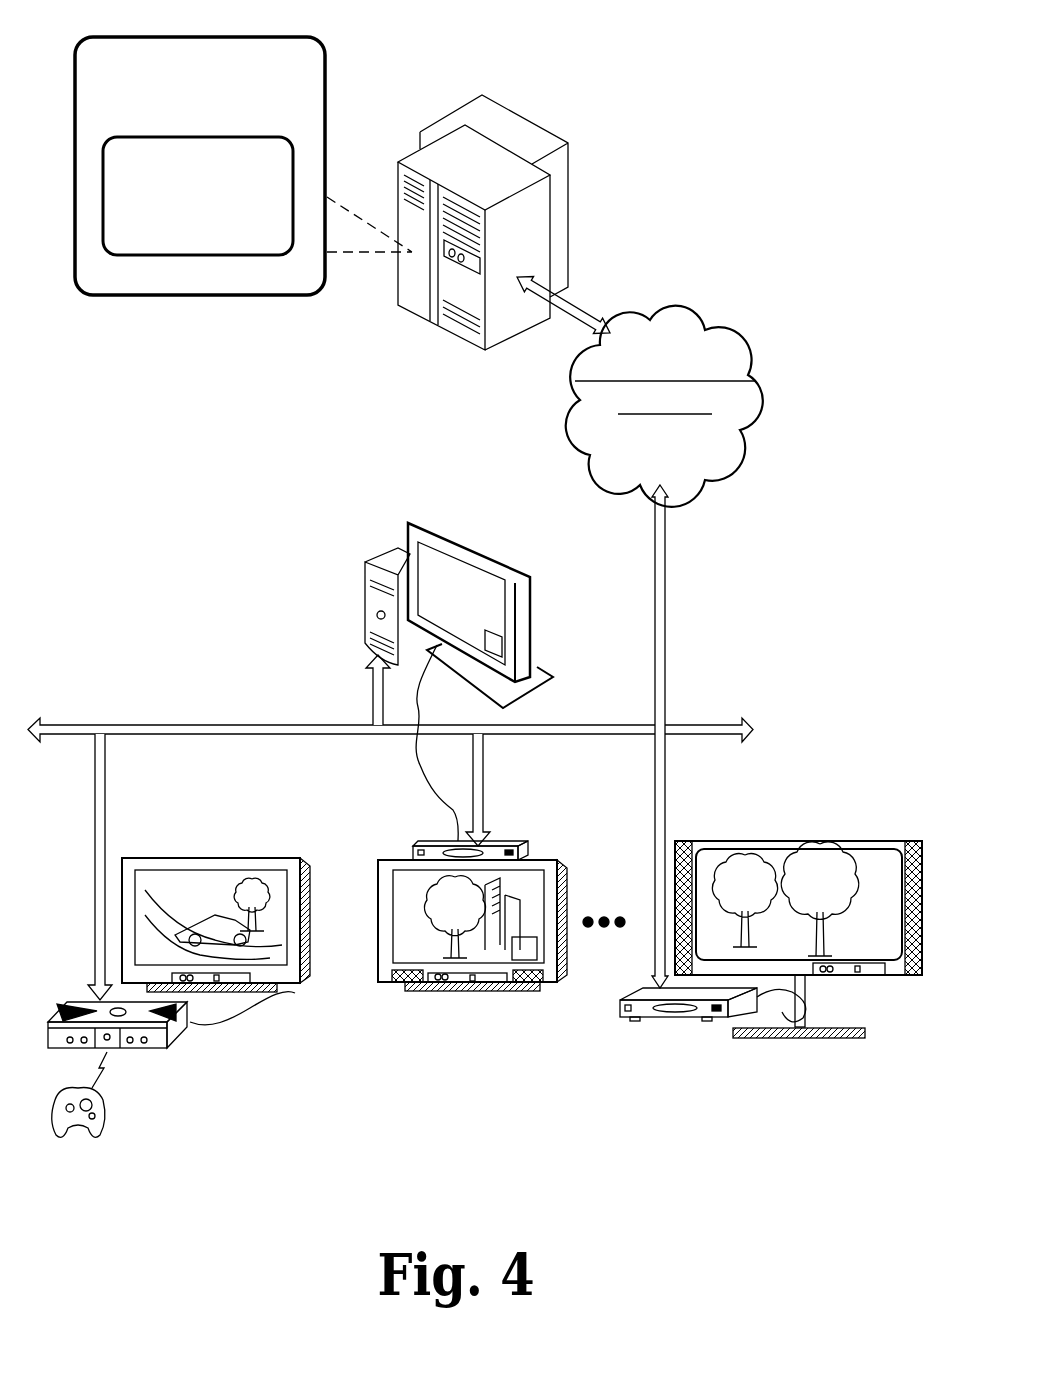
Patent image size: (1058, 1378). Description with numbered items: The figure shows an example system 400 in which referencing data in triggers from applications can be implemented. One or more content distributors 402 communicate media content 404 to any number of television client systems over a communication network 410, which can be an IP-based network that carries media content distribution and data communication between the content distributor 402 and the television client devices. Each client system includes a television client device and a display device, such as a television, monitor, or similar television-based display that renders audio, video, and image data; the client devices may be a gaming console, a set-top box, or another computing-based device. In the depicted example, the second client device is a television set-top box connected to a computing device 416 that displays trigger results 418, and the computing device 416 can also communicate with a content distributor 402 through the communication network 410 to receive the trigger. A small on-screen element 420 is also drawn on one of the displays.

The system 400 is at (778, 29).
The content distributor 402 is at (181, 117).
The media content 404 is at (178, 222).
The communication network 410 is at (646, 457).
The computing device 416 is at (390, 562).
The trigger results 418 is at (497, 637).
The user interface element 420 is at (522, 960).